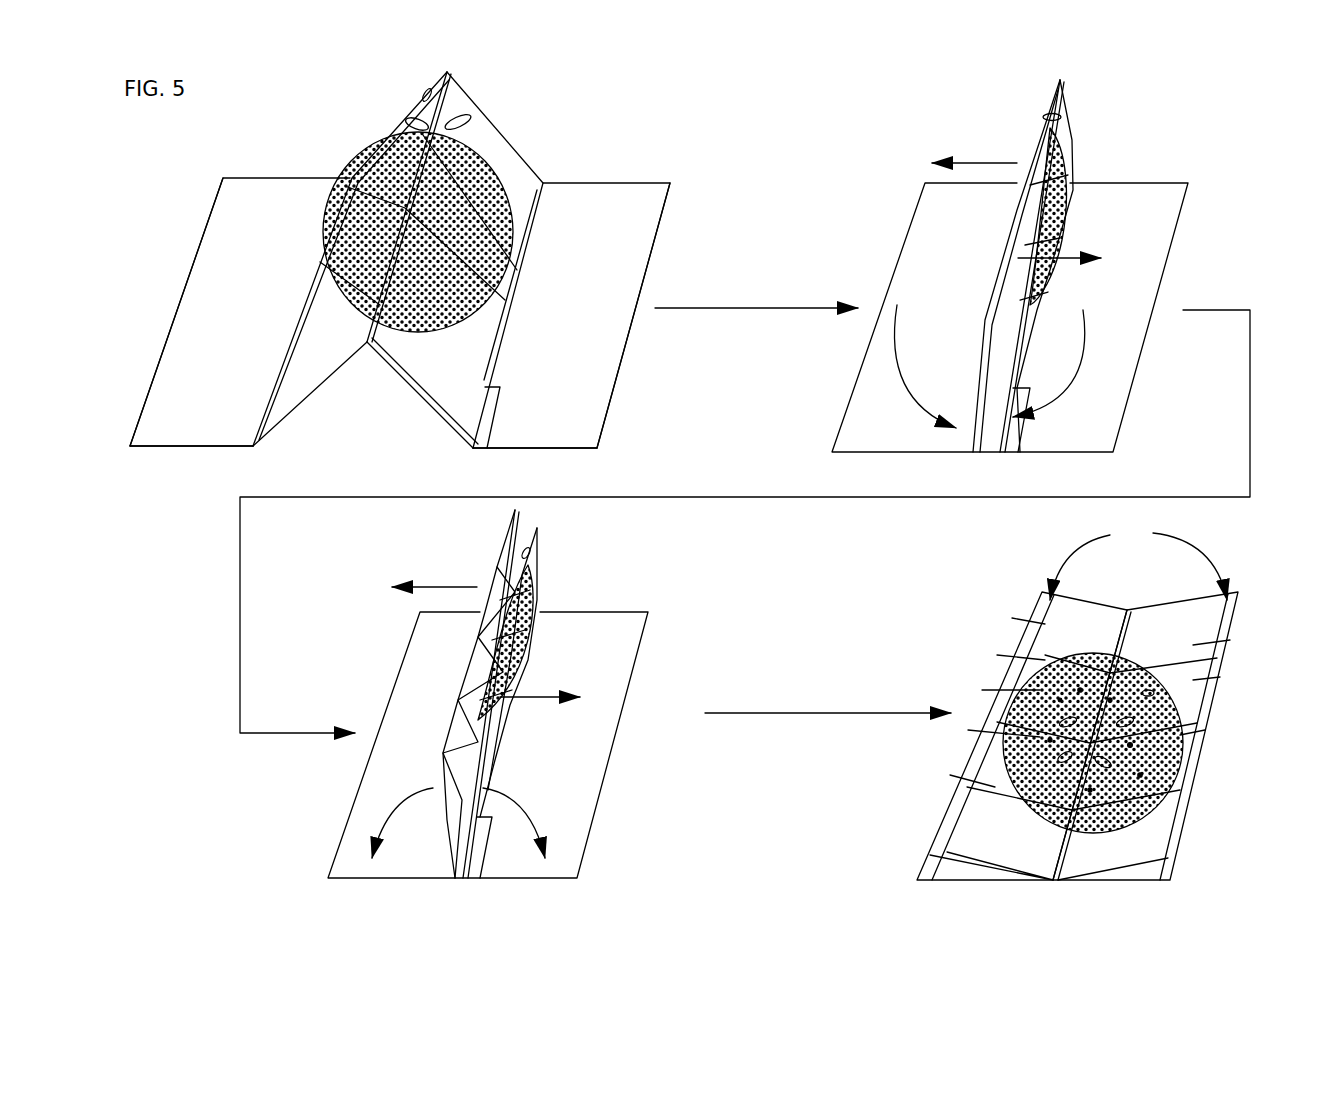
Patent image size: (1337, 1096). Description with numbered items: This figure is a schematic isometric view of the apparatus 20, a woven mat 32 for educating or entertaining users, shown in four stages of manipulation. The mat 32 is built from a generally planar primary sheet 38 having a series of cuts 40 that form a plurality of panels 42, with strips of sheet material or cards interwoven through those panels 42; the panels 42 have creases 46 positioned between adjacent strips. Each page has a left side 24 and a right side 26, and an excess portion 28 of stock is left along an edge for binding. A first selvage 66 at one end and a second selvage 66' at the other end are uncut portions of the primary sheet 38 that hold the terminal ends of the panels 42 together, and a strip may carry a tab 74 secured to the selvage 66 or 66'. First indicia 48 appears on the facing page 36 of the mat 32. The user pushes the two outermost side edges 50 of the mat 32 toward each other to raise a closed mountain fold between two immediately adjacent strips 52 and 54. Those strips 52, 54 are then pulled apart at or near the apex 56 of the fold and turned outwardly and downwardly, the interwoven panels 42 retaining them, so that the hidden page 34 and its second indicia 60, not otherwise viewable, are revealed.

The apparatus 20 is at (612, 140).
The left side 24 is at (215, 213).
The right side 26 is at (630, 340).
The excess portion 28 is at (197, 283).
The woven mat 32 is at (395, 370).
The hidden page 34 is at (1020, 620).
The facing page 36 is at (405, 123).
The primary sheet 38 is at (648, 248).
The cuts 40 is at (395, 140).
The panels 42 is at (487, 125).
The creases 46 is at (235, 446).
The first indicia 48 is at (525, 180).
The outermost side edges 50 is at (296, 291).
The first adjacent strip 52 is at (365, 175).
The second adjacent strip 54 is at (457, 410).
The apex 56 is at (450, 70).
The second indicia 60 is at (425, 95).
The first selvage 66 is at (539, 677).
The second selvage 66' is at (843, 672).
The tab 74 is at (488, 425).